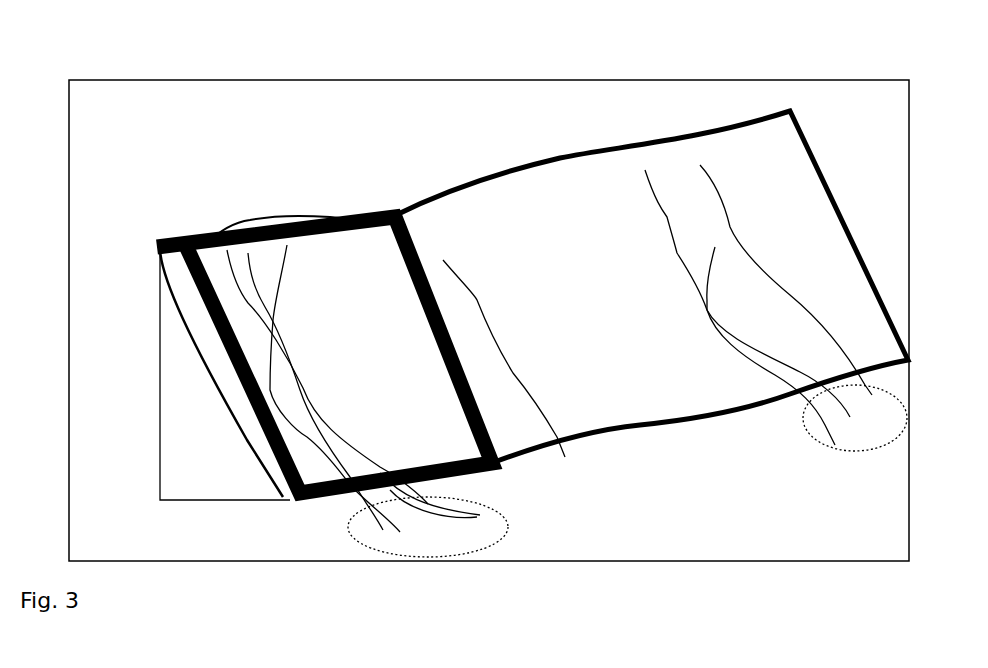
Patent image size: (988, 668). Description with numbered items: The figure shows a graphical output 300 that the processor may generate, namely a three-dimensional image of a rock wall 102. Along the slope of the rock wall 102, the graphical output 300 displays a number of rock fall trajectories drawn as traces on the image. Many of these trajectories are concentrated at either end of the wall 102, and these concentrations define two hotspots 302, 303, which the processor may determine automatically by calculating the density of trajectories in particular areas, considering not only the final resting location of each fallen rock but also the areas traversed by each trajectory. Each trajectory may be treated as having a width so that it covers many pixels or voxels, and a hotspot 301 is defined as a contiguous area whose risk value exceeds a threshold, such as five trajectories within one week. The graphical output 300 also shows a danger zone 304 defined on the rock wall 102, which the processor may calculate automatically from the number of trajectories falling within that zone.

The graphical output 300 is at (128, 63).
The rock wall 102 is at (473, 163).
The hotspot 301 is at (443, 262).
The hotspot 302 is at (504, 518).
The hotspot 303 is at (816, 437).
The danger zone 304 is at (385, 205).